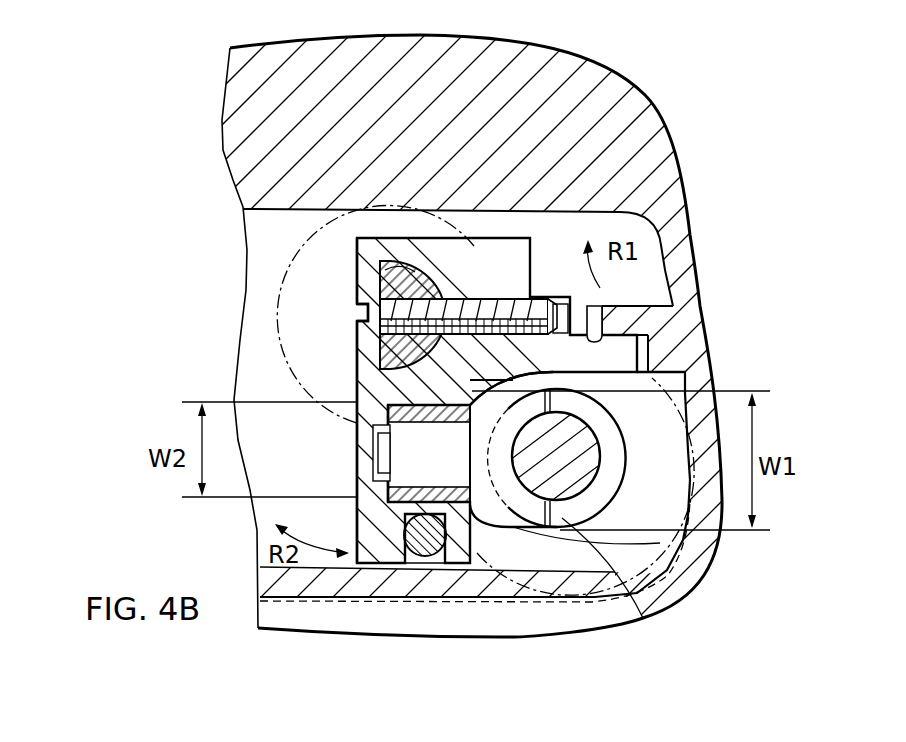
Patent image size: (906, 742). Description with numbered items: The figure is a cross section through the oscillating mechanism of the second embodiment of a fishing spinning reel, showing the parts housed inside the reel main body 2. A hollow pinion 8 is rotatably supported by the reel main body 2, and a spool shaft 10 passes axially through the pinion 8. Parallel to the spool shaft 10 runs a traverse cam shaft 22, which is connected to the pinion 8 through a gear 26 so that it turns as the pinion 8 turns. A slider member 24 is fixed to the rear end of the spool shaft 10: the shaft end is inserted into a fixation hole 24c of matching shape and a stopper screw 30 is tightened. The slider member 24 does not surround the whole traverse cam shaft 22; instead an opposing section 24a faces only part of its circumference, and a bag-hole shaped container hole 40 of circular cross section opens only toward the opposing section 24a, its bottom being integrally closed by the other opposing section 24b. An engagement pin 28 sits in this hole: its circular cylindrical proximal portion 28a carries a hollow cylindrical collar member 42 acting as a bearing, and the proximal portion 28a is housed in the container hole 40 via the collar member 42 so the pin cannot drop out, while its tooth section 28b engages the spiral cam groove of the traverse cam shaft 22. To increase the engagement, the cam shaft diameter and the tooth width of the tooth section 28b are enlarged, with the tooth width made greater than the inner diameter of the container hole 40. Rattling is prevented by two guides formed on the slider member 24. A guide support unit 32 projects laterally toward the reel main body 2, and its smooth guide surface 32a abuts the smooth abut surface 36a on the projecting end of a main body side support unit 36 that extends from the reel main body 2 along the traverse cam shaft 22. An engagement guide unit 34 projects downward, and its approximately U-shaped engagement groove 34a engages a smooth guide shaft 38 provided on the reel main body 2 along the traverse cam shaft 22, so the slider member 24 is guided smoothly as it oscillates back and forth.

The reel main body 2 is at (658, 113).
The pinion 8 is at (272, 347).
The spool shaft 10 is at (455, 262).
The traverse cam shaft 22 is at (602, 483).
The slider member 24 is at (357, 266).
The opposing section 24a is at (473, 442).
The other opposing section 24b is at (357, 363).
The fixation hole 24c is at (357, 284).
The gear 26 is at (690, 572).
The engagement pin 28 is at (553, 528).
The proximal portion 28a is at (373, 477).
The tooth section 28b is at (630, 602).
The stopper screw 30 is at (357, 296).
The guide support unit 32 is at (643, 355).
The guide surface 32a is at (622, 325).
The engagement guide unit 34 is at (352, 567).
The engagement groove 34a is at (413, 560).
The main body side support unit 36 is at (660, 300).
The abut surface 36a is at (595, 338).
The guide shaft 38 is at (430, 552).
The container hole 40 is at (373, 443).
The collar member 42 is at (516, 532).